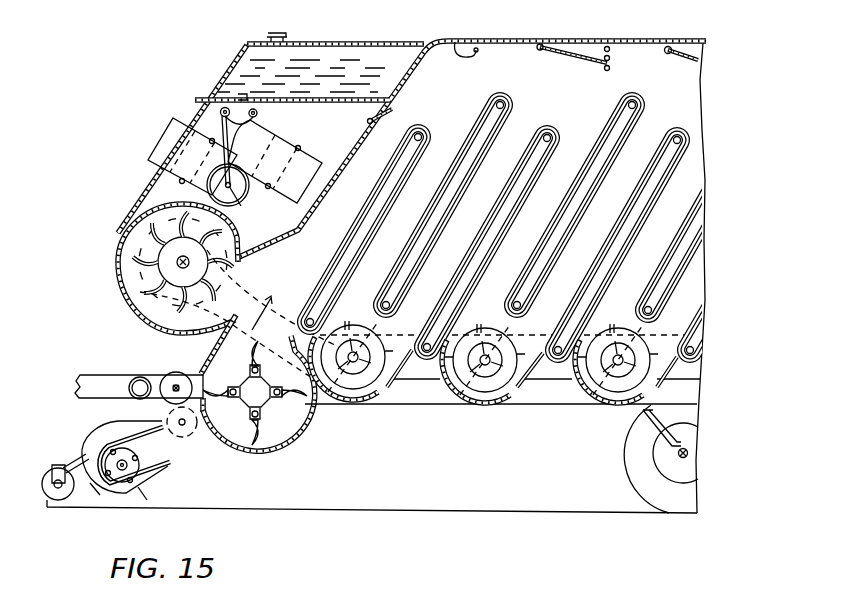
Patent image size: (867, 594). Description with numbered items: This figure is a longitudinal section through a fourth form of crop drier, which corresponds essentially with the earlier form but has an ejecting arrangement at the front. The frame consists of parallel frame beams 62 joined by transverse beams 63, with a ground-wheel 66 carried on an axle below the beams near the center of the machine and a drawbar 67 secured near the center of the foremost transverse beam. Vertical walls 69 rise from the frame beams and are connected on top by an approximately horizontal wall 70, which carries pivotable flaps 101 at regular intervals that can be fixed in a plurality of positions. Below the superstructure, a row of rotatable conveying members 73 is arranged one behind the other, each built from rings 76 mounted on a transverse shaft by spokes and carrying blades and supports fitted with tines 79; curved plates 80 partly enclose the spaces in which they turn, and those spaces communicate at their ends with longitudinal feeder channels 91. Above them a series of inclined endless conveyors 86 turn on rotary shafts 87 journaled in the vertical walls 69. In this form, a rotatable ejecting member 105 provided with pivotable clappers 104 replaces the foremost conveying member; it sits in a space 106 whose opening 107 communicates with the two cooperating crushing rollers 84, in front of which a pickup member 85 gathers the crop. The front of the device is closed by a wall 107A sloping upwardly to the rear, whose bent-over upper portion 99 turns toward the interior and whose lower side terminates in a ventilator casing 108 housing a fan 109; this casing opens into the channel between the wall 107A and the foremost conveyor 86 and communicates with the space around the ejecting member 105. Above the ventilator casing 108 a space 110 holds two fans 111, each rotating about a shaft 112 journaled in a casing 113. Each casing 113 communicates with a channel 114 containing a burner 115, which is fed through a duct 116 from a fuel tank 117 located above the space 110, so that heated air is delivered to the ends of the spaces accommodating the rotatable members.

The frame beams 62 is at (440, 405).
The transverse beams 63 is at (140, 377).
The ground-wheel 66 is at (634, 486).
The drawbar 67 is at (85, 374).
The vertical walls 69 is at (636, 50).
The horizontal wall 70 is at (525, 38).
The rotatable conveying members 73 is at (368, 318).
The rings 76 is at (647, 337).
The tines 79 is at (484, 322).
The curved plates 80 is at (378, 403).
The crushing rollers 84 is at (180, 372).
The pickup member 85 is at (143, 488).
The endless conveyors 86 is at (442, 191).
The rotary shafts 87 is at (556, 133).
The feeder channels 91 is at (220, 340).
The bent-over portion 99 is at (468, 56).
The flaps 101 is at (571, 60).
The pivotable clappers 104 is at (258, 456).
The rotatable ejecting member 105 is at (268, 440).
The space 106 is at (306, 413).
The opening 107 is at (205, 412).
The wall 107A is at (385, 113).
The ventilator casing 108 is at (117, 274).
The fan 109 is at (140, 293).
The space 110 is at (140, 200).
The fans 111 is at (170, 142).
The shaft 112 is at (300, 142).
The casing 113 is at (312, 158).
The channel 114 is at (240, 194).
The burner 115 is at (238, 210).
The duct 116 is at (262, 100).
The fuel tank 117 is at (231, 70).